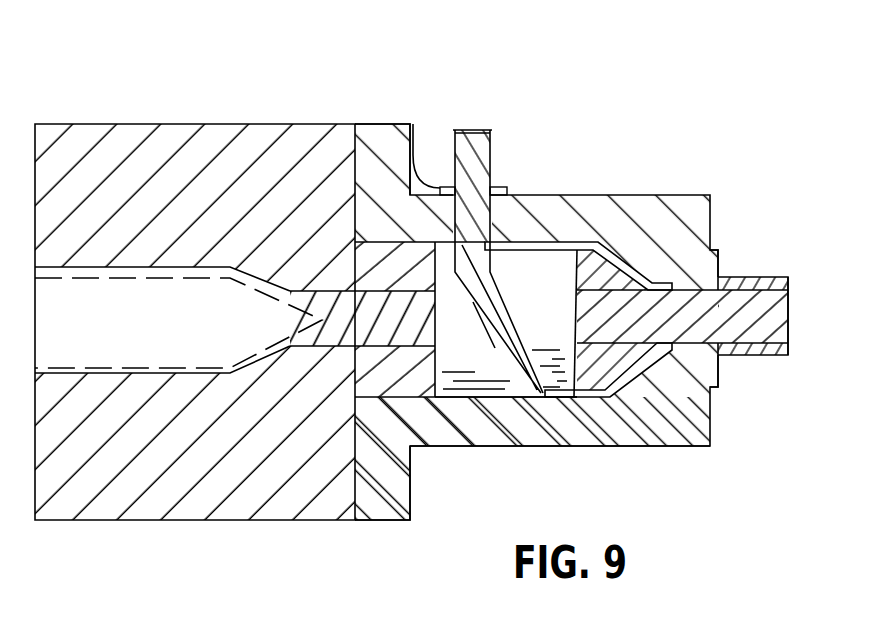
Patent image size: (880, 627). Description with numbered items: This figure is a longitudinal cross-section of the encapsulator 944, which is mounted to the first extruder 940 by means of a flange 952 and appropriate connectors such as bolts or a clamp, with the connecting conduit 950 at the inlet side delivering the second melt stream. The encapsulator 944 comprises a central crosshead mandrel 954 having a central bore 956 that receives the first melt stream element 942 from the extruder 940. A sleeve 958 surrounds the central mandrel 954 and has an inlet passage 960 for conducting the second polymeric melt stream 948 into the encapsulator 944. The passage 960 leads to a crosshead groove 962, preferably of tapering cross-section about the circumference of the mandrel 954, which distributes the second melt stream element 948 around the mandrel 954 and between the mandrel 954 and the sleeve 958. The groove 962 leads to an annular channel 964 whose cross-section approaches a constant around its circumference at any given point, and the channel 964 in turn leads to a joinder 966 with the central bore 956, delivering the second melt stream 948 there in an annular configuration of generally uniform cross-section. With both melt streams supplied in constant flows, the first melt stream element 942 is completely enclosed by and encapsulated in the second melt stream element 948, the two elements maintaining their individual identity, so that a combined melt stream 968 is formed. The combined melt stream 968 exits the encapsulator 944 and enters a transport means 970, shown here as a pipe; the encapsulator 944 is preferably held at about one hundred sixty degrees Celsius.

The first extruder 940 is at (138, 124).
The first melt stream element 942 is at (315, 338).
The encapsulator 944 is at (608, 194).
The second melt stream element 948 is at (478, 182).
The pin 950 is at (475, 177).
The flange 952 is at (403, 498).
The central crosshead mandrel 954 is at (504, 335).
The central bore 956 is at (592, 395).
The sleeve 958 is at (507, 447).
The inlet passage 960 is at (397, 143).
The crosshead groove 962 is at (477, 305).
The annular channel 964 is at (593, 238).
The joinder 966 is at (672, 348).
The combined melt stream 968 is at (738, 268).
The transport means 970 is at (783, 357).